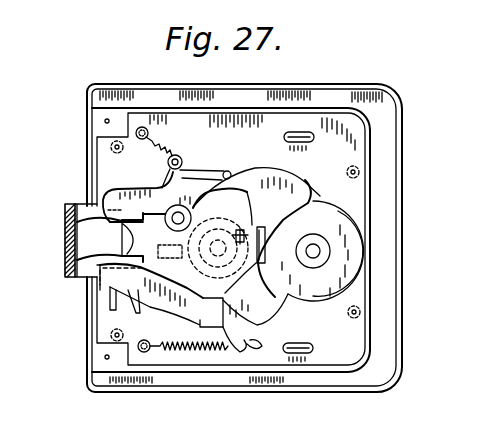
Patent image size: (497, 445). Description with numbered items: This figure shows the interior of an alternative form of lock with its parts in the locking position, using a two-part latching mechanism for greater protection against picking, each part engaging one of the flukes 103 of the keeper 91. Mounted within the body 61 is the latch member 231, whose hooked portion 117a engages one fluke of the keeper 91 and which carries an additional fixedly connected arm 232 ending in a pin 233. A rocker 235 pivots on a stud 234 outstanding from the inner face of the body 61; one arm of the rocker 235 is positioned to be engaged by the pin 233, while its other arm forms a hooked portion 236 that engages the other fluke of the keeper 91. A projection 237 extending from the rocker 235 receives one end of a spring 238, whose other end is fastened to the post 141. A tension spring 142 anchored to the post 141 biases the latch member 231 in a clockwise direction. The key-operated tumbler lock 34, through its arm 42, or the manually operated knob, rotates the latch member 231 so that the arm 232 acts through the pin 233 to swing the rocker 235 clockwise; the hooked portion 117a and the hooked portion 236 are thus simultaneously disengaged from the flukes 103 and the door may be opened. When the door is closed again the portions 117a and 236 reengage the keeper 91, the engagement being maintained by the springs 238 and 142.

The body 61 is at (338, 81).
The keeper 91 is at (76, 204).
The flukes 103 is at (128, 252).
The hooked portion 236 is at (107, 200).
The rocker 235 is at (124, 192).
The projection 237 is at (182, 164).
The spring 238 is at (163, 152).
The post 141 is at (141, 127).
The pin 233 is at (229, 171).
The stud 234 is at (191, 215).
The tumbler lock 34 is at (238, 262).
The arm 232 is at (282, 185).
The latch member 231 is at (348, 260).
The arm 42 is at (173, 265).
The hooked portion 117a is at (113, 272).
The tension spring 142 is at (203, 352).